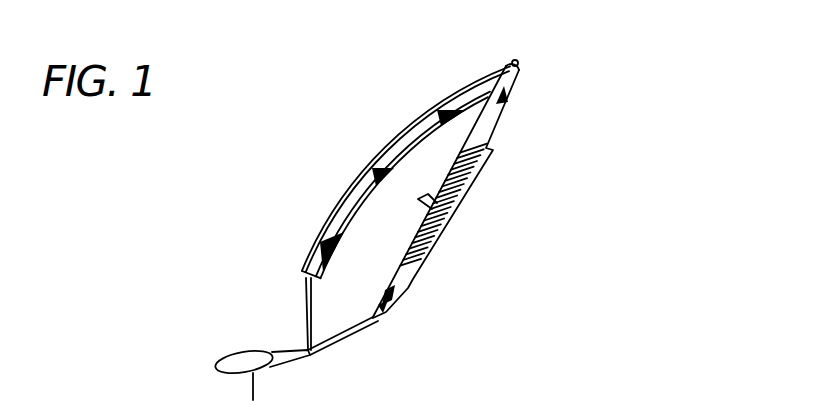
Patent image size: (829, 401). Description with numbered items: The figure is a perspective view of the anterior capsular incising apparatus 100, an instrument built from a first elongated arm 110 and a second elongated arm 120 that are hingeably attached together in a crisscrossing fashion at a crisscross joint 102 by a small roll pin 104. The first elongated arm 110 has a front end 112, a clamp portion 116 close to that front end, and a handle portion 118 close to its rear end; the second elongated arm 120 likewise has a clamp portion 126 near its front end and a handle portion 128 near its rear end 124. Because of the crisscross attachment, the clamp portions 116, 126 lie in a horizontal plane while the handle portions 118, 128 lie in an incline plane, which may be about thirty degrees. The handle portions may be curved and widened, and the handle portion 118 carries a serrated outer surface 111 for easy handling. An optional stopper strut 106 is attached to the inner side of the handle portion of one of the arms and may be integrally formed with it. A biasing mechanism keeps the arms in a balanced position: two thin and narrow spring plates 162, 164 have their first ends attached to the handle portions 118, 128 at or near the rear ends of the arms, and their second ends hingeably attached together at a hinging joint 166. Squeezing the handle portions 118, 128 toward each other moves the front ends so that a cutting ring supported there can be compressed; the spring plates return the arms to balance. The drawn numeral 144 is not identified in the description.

The anterior capsular incising apparatus 100 is at (274, 102).
The crisscross joint 102 is at (308, 352).
The small roll pin 104 is at (302, 350).
The stopper strut 106 is at (422, 200).
The first elongated arm 110 is at (505, 192).
The serrated outer surface 111 is at (447, 221).
The front end 112 is at (236, 353).
The clamp portion 116 is at (265, 353).
The handle portion 118 is at (468, 198).
The second elongated arm 120 is at (311, 250).
The rear end 124 is at (462, 98).
The clamp portion 126 is at (270, 367).
The handle portion 128 is at (393, 162).
The upper rack portion 144 is at (487, 146).
The first thin spring plate 162 is at (503, 84).
The second thin spring plate 164 is at (487, 90).
The hinging joint 166 is at (519, 58).